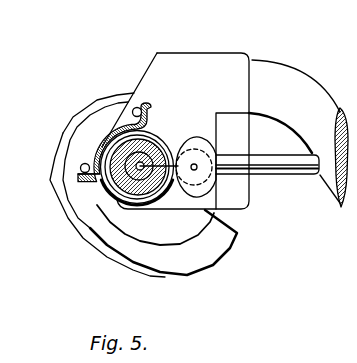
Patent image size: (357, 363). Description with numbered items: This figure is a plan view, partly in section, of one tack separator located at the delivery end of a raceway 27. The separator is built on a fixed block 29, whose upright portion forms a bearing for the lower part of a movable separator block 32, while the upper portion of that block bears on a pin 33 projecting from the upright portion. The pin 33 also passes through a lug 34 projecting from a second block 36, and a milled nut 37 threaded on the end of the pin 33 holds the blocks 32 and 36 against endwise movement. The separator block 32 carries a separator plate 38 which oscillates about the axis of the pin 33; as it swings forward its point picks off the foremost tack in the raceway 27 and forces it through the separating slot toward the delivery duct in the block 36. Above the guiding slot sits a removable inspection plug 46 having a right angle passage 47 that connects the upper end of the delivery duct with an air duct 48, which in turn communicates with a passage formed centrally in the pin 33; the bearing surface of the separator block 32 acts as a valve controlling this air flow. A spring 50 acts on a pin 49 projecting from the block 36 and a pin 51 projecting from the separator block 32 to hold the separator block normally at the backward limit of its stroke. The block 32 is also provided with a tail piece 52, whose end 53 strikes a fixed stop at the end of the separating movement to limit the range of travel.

The raceway 27 is at (318, 157).
The block 29 is at (79, 110).
The movable separator block 32 is at (122, 100).
The pin 33 is at (114, 198).
The lug 34 is at (175, 200).
The block 36 is at (253, 62).
The milled nut 37 is at (100, 192).
The separator plate 38 is at (85, 135).
The removable inspection plug 46 is at (196, 160).
The right angle passage 47 is at (195, 165).
The air duct 48 is at (200, 178).
The pin 49 is at (158, 55).
The spring 50 is at (115, 137).
The pin 51 is at (81, 170).
The tail piece 52 is at (180, 257).
The end of tail piece 53 is at (222, 227).